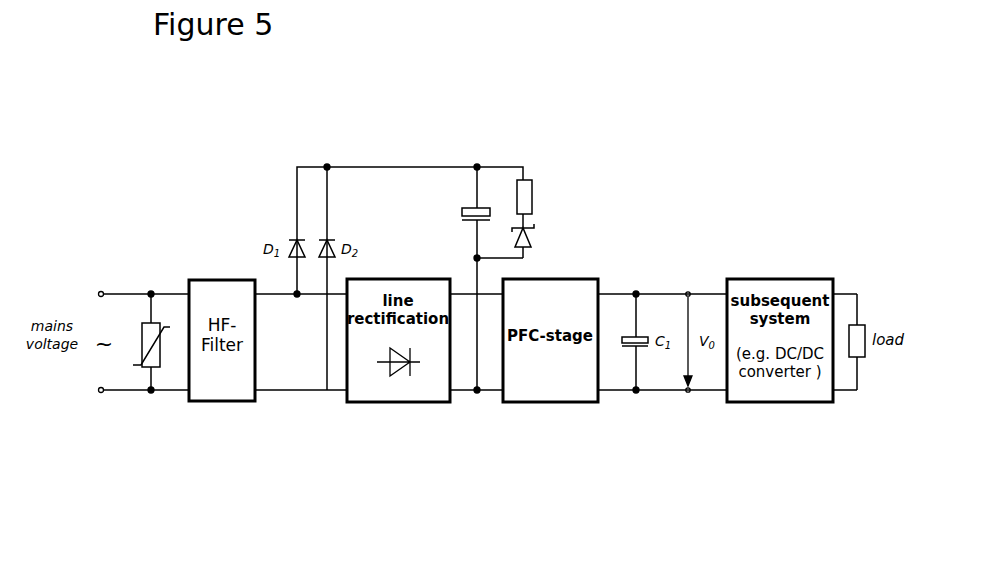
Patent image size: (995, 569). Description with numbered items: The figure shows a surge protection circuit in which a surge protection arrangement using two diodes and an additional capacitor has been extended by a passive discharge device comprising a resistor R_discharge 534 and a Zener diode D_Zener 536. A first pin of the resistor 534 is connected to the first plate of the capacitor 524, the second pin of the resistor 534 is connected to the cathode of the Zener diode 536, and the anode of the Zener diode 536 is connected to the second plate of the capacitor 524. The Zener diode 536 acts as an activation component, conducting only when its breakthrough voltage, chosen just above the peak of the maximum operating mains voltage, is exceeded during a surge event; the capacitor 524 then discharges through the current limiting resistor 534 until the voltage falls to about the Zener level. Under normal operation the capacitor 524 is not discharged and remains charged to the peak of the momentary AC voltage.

The capacitor C2 524 is at (461, 208).
The resistor R_discharge 534 is at (528, 181).
The Zener diode D_Zener 536 is at (531, 228).